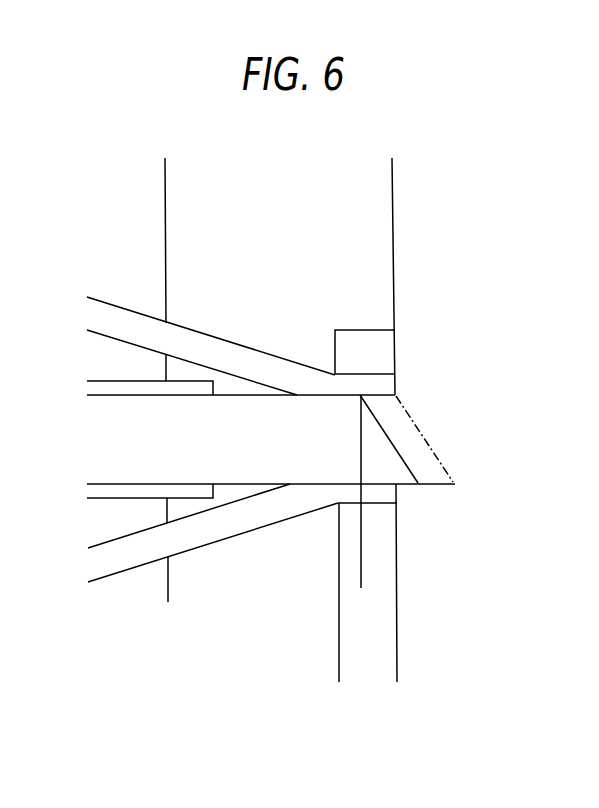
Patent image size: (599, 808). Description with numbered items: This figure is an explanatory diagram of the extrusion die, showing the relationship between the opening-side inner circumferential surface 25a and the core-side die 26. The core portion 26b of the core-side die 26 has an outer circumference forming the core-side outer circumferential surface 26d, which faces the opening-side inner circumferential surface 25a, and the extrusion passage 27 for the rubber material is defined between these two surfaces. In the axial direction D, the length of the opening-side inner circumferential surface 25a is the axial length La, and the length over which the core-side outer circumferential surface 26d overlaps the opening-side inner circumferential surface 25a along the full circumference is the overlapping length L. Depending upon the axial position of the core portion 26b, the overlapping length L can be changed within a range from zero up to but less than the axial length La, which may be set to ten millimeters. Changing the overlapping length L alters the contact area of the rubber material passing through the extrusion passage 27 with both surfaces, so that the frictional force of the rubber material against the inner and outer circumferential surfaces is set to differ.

The core-side outer circumferential surface 26d is at (345, 395).
The opening-side inner circumferential surface 25a is at (373, 377).
The core portion 26b is at (427, 440).
The core-side die 26 is at (403, 460).
The extrusion passage 27 is at (372, 493).
The axial direction D is at (82, 461).
The overlapping length L is at (387, 573).
The axial length of the opening-side inner circumferential surface La is at (397, 653).